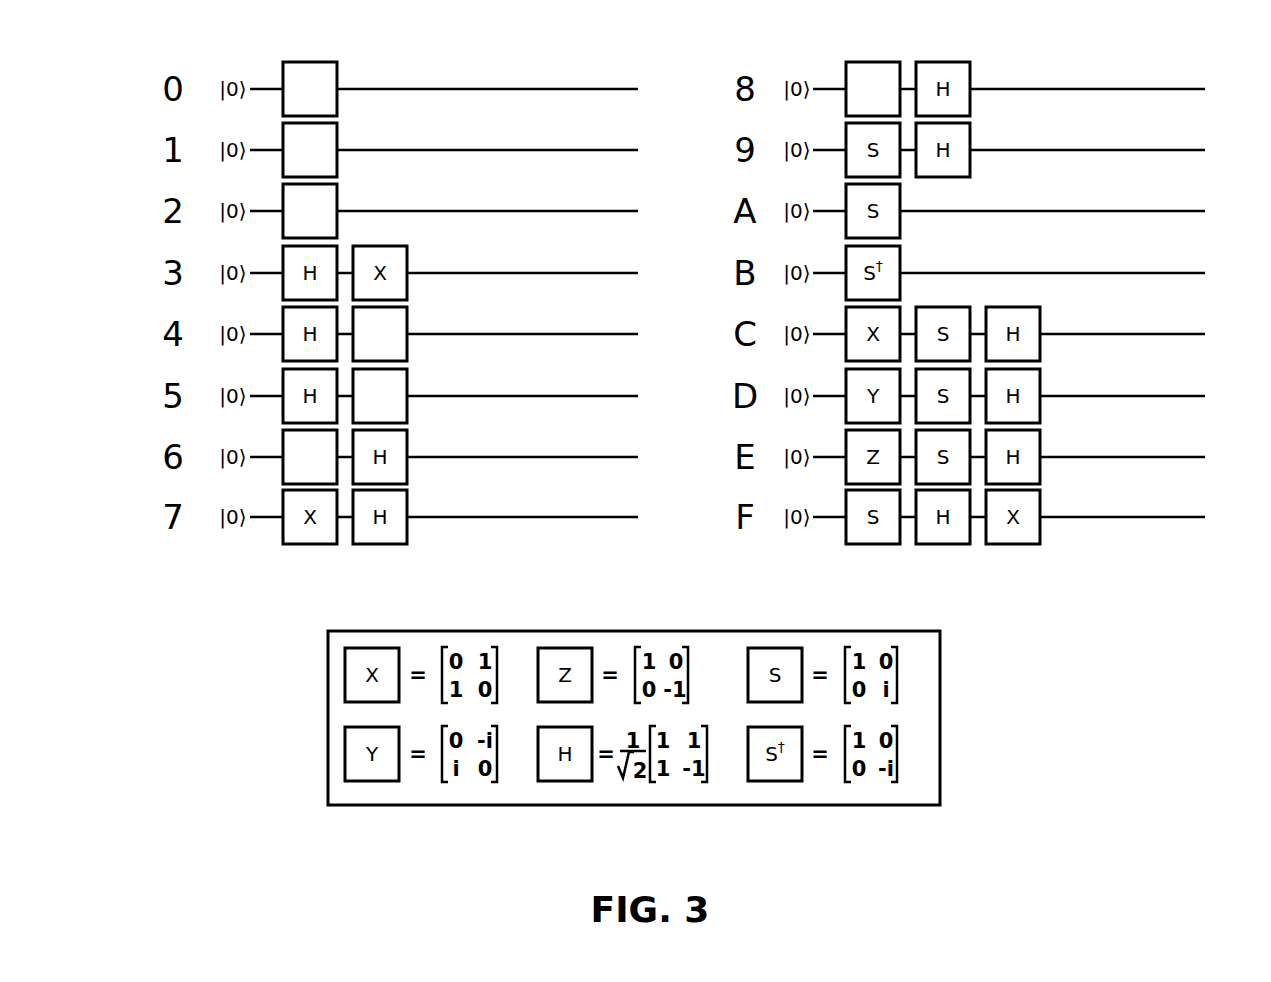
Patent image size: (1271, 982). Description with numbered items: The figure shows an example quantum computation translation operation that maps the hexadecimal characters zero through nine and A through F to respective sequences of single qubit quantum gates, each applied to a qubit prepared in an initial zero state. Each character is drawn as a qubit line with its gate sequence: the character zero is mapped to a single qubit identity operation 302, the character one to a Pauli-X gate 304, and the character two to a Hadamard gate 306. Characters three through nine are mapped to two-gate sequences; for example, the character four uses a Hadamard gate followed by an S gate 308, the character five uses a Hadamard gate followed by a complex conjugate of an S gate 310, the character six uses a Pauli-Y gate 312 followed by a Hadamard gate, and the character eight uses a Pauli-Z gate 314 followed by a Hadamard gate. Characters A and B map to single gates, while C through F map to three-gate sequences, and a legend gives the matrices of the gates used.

The single qubit identity operation 302 is at (313, 62).
The Pauli-X gate 304 is at (337, 139).
The Hadamard gate 306 is at (337, 201).
The S gate 308 is at (408, 323).
The complex conjugate of an S gate 310 is at (408, 385).
The Pauli-Y gate 312 is at (283, 438).
The Pauli-Z gate 314 is at (875, 62).